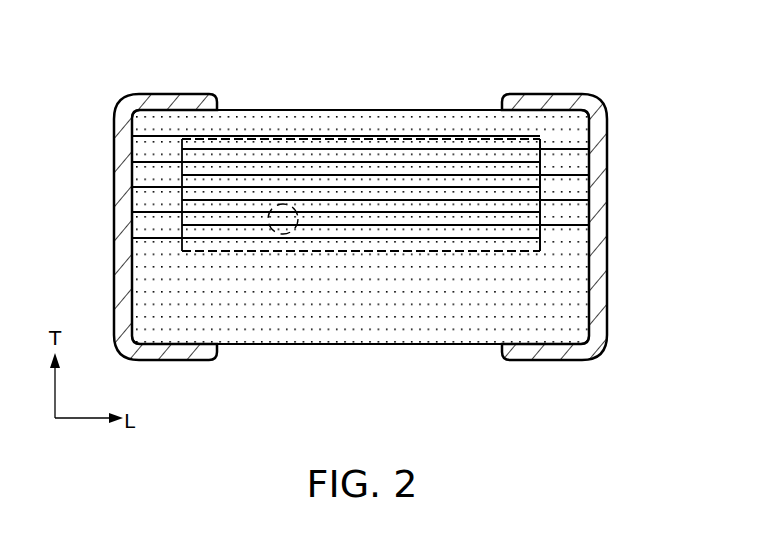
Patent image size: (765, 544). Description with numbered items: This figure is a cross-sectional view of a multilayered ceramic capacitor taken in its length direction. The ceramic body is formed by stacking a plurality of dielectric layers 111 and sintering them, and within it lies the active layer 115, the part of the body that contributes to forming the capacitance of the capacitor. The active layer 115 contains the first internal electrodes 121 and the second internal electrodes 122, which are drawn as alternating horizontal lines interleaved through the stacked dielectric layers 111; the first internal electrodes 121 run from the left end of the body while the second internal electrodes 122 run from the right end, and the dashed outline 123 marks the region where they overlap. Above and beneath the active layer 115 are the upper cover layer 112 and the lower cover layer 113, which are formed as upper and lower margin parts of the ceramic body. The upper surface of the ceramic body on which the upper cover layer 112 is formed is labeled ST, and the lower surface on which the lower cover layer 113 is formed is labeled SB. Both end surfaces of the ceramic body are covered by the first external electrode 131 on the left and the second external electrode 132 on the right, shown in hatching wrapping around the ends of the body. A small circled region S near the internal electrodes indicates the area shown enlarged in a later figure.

The dielectric layer 111 is at (527, 208).
The upper cover layer 112 is at (388, 120).
The lower cover layer 113 is at (387, 337).
The active layer 115 is at (556, 185).
The first internal electrode 121 is at (157, 187).
The second internal electrode 122 is at (192, 200).
The capacitance forming portion 123 is at (238, 150).
The first external electrode 131 is at (169, 102).
The second external electrode 132 is at (553, 102).
The region S is at (288, 233).
The upper surface of the ceramic body ST is at (315, 110).
The lower surface of the ceramic body SB is at (325, 347).